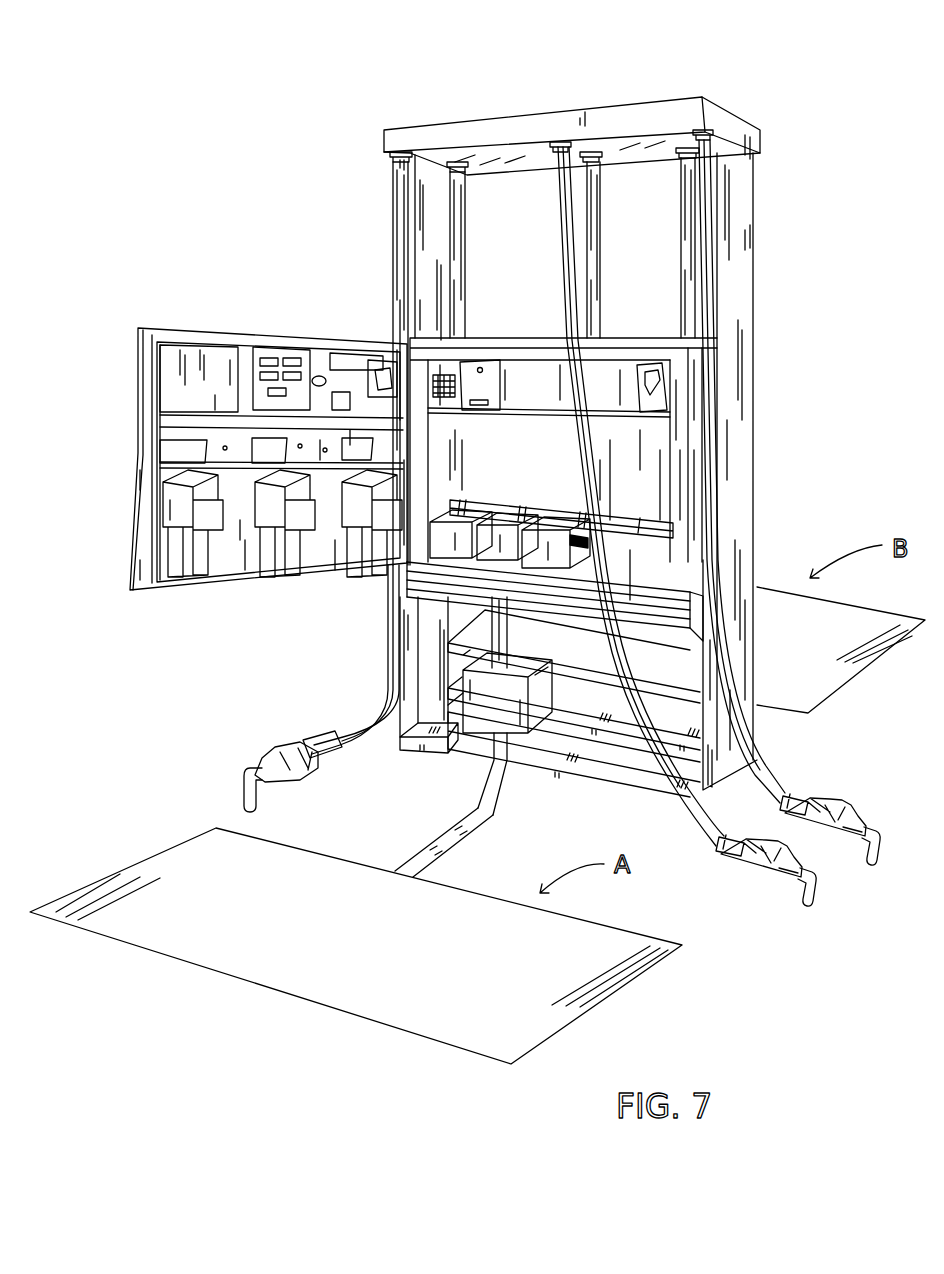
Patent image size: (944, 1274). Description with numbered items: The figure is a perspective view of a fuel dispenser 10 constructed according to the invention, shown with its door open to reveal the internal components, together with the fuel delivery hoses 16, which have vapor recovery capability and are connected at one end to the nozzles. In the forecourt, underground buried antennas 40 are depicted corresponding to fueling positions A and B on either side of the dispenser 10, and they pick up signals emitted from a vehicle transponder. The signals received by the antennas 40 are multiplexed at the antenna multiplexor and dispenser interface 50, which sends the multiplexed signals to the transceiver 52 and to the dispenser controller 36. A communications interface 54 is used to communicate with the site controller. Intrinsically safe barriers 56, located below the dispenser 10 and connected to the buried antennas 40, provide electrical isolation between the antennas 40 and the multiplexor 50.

The dispenser 10 is at (712, 51).
The fuel delivery hose 16 is at (600, 486).
The dispenser controller 36 is at (430, 543).
The buried antennas 40 is at (475, 981).
The antenna multiplexor and dispenser interface 50 is at (533, 566).
The transceiver 52 is at (490, 557).
The communications interface 54 is at (577, 550).
The intrinsically safe barriers 56 is at (483, 707).